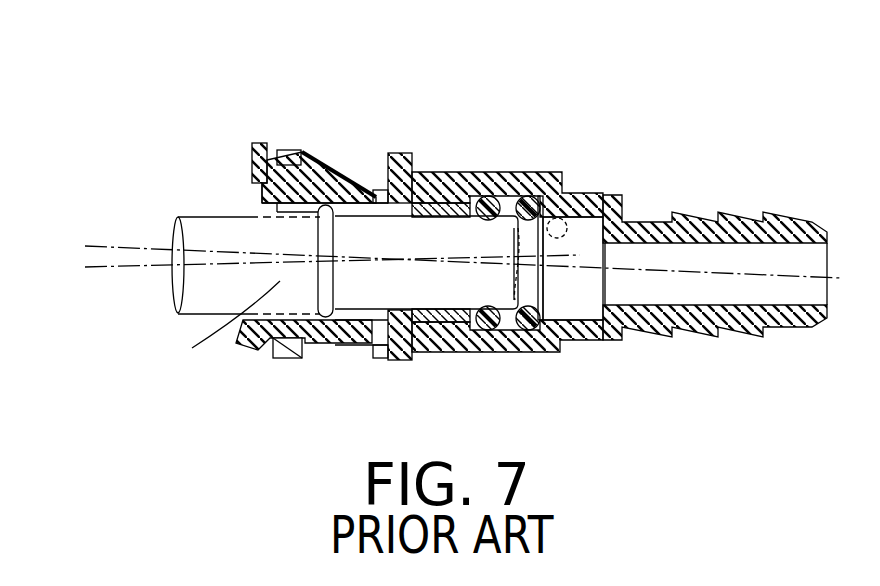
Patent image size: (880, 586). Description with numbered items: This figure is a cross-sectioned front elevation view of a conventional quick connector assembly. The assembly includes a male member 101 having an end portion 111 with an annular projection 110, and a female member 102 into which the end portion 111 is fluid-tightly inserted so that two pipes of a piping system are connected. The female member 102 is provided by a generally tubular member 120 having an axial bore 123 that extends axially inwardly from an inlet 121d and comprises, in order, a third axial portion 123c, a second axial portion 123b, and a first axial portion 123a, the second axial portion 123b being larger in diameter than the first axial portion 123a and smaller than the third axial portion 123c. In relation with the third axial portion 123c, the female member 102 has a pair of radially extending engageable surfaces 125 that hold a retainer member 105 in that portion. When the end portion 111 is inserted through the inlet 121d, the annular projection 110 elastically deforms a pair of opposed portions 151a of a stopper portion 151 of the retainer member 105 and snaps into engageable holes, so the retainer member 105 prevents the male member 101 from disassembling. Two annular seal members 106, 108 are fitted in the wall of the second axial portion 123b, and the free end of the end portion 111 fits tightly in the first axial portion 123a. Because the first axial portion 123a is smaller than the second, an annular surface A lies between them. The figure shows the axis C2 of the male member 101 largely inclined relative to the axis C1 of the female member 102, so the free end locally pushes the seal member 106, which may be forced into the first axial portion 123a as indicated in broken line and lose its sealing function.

The male member 101 is at (205, 203).
The female member 102 is at (622, 182).
The retainer member 105 is at (258, 138).
The annular seal member 106 is at (535, 185).
The annular seal member 108 is at (493, 182).
The annular projection 110 is at (337, 310).
The end portion 111 is at (214, 324).
The tubular member 120 is at (463, 180).
The inlet 121d is at (273, 347).
The axial bore 123 is at (412, 249).
The first axial portion 123a is at (579, 300).
The second axial portion 123b is at (465, 317).
The third axial portion 123c is at (377, 310).
The engageable surface 125 is at (277, 148).
The stopper portion 151 is at (328, 148).
The opposed portion 151a is at (360, 148).
The annular surface A is at (545, 313).
The axis of the female member C1 is at (113, 243).
The axis of the male member C2 is at (118, 270).